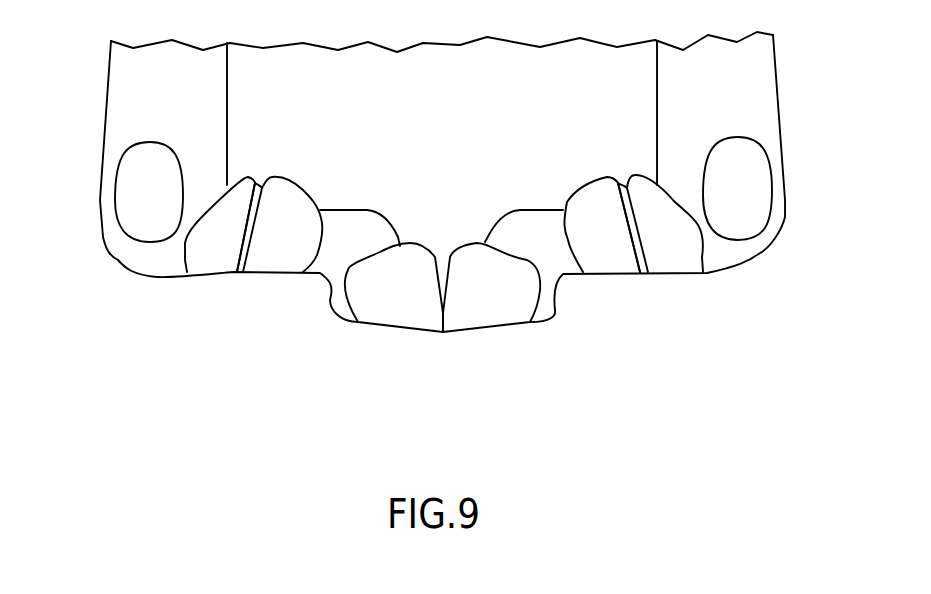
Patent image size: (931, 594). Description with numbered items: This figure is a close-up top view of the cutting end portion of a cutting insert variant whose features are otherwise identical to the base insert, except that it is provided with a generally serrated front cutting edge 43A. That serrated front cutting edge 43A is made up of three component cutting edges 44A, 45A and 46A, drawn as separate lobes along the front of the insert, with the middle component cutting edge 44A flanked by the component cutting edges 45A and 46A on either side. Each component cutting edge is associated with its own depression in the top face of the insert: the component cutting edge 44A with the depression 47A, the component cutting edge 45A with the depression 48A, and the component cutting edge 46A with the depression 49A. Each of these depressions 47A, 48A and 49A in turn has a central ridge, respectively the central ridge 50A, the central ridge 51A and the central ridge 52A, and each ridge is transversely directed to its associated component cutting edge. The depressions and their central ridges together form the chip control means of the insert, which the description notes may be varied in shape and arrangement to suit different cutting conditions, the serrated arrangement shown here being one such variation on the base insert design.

The generally serrated front cutting edge 43A is at (418, 357).
The component cutting edge 44A is at (388, 323).
The component cutting edge 45A is at (268, 273).
The component cutting edge 46A is at (620, 273).
The depression 47A is at (420, 300).
The depression 48A is at (238, 247).
The depression 49A is at (627, 240).
The central ridge 50A is at (448, 283).
The central ridge 51A is at (257, 223).
The central ridge 52A is at (642, 232).